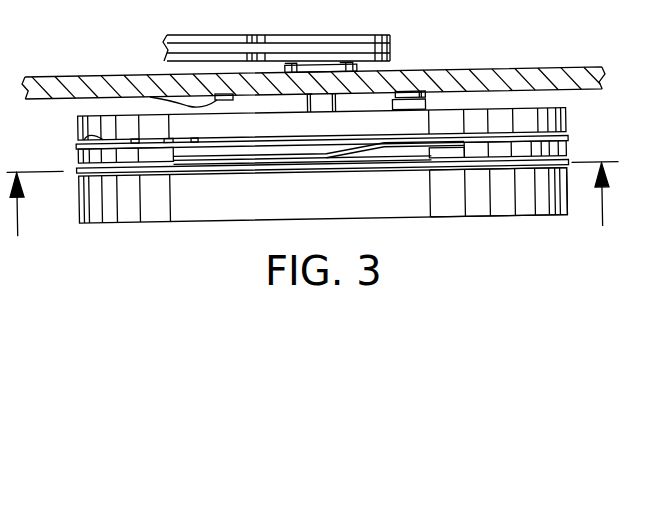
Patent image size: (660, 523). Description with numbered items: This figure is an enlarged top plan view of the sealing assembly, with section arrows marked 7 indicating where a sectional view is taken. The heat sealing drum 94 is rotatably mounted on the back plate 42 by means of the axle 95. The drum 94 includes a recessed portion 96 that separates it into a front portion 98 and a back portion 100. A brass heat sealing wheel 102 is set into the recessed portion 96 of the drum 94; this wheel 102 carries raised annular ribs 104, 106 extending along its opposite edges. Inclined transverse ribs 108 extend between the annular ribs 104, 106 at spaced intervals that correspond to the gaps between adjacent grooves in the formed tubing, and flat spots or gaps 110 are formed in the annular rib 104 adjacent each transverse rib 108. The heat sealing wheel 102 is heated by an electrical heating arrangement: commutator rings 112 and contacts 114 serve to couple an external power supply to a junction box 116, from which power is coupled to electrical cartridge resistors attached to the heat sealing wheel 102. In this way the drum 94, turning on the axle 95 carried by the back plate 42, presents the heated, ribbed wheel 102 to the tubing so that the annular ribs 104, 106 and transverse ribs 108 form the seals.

The back plate 42 is at (68, 84).
The commutator rings 112 is at (161, 93).
The contacts 114 is at (415, 99).
The junction box 116 is at (418, 113).
The back portion 100 is at (77, 121).
The axle 95 is at (323, 108).
The raised annular rib 106 is at (78, 136).
The raised annular rib 104 is at (245, 166).
The inclined transverse ribs 108 is at (351, 166).
The flat spots or gaps 110 is at (400, 165).
The brass heat sealing wheel 102 is at (560, 156).
The recessed portion 96 is at (75, 171).
The heat sealing drum 94 is at (167, 224).
The front portion 98 is at (470, 210).
The section line 7- 7 is at (314, 214).